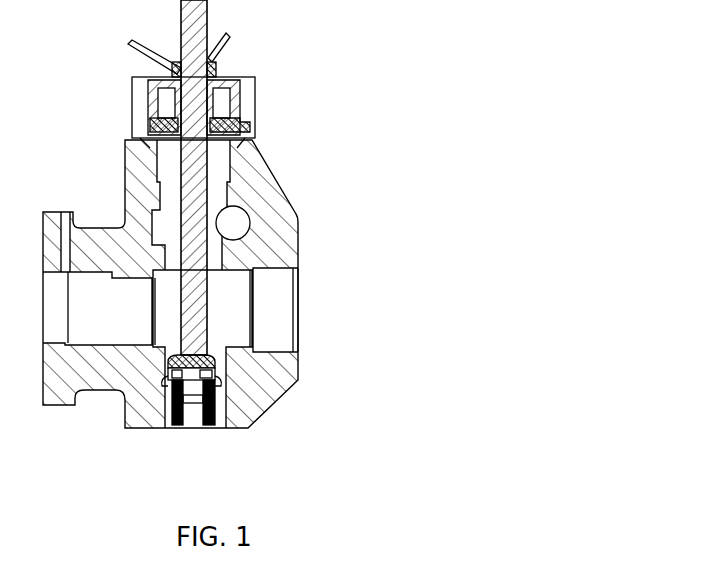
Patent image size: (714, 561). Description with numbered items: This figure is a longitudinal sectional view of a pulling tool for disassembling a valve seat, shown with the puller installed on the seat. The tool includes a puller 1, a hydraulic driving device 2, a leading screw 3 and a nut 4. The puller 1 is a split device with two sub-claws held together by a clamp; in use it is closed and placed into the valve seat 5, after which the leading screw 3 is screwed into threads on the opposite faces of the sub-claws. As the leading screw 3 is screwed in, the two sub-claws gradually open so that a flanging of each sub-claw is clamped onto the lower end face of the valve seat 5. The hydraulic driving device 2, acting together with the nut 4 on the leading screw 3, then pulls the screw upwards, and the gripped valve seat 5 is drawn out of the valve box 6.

The puller 1 is at (167, 423).
The hydraulic driving device 2 is at (255, 98).
The leading screw 3 is at (200, 312).
The nut 4 is at (210, 52).
The valve seat 5 is at (222, 395).
The valve box 6 is at (278, 218).